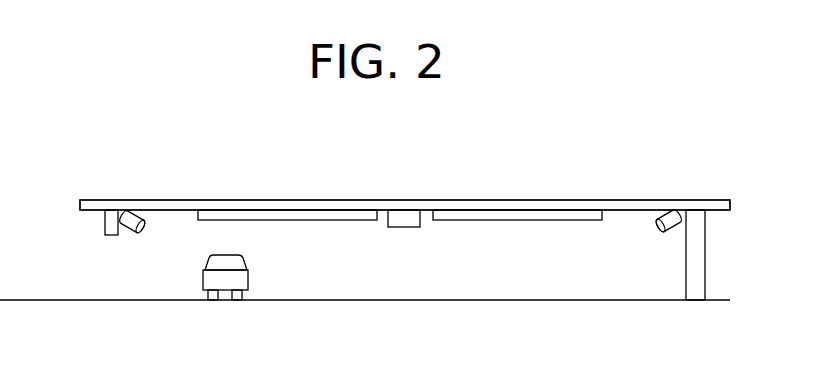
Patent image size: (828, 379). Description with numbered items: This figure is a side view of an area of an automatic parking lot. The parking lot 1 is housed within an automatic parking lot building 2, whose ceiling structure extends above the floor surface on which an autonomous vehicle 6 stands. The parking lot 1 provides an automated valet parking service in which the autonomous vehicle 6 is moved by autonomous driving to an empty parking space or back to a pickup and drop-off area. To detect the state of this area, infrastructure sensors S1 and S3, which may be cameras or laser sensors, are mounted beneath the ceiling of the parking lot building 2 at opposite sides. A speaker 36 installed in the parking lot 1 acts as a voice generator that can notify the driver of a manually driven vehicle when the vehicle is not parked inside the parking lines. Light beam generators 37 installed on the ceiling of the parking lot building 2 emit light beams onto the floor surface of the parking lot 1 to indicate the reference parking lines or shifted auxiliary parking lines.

The parking lot 1 is at (431, 292).
The automatic parking lot building 2 is at (606, 201).
The speaker 36 is at (406, 228).
The light beam generator 37 is at (321, 220).
The autonomous vehicle 6 is at (227, 280).
The infrastructure sensor S1 is at (132, 217).
The infrastructure sensor S3 is at (672, 215).